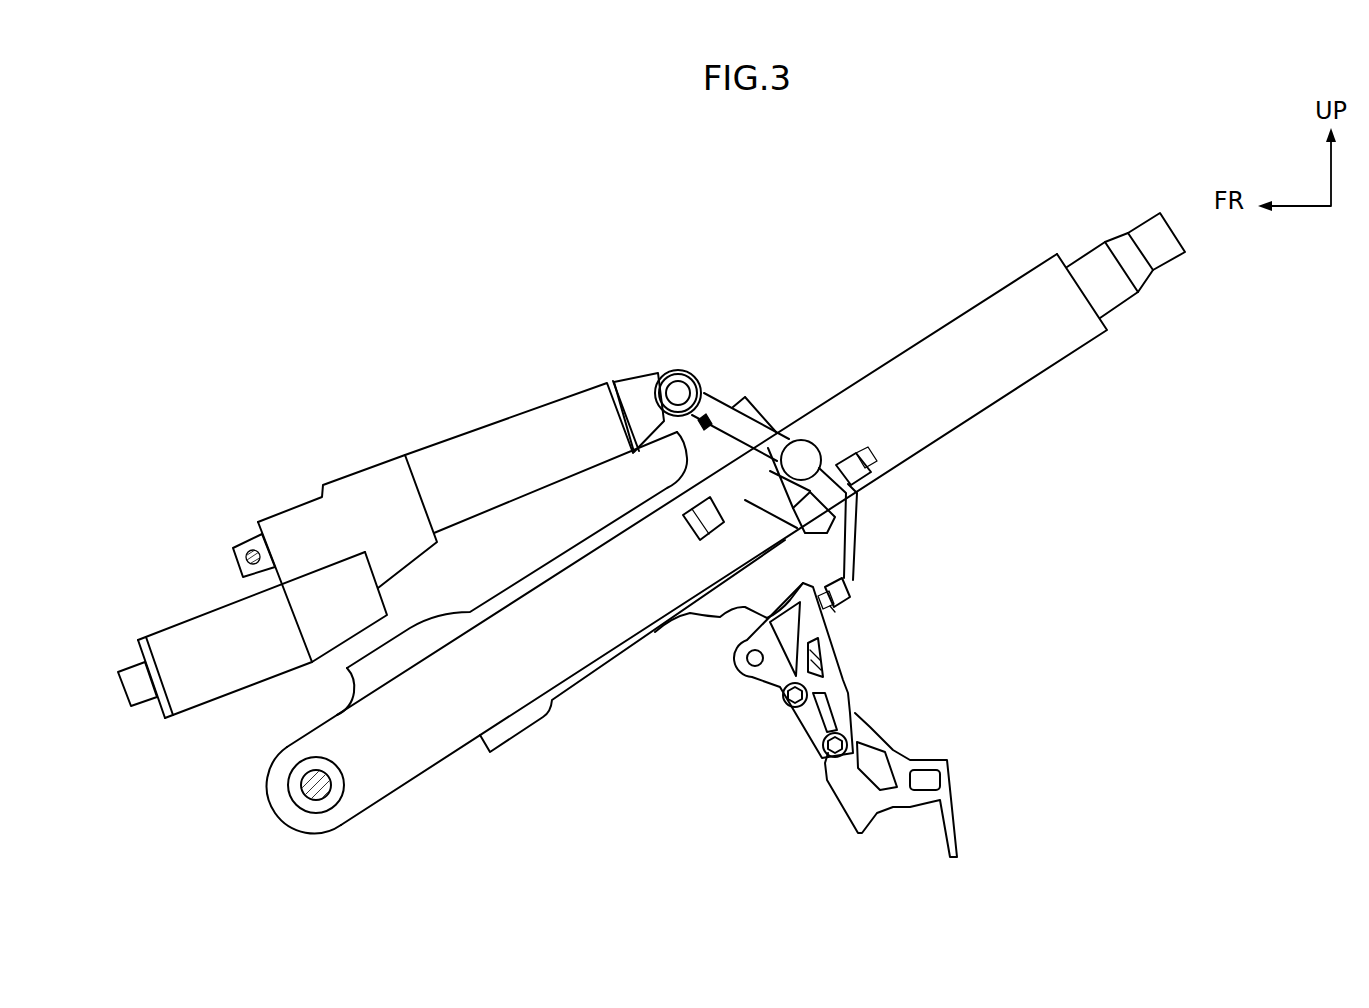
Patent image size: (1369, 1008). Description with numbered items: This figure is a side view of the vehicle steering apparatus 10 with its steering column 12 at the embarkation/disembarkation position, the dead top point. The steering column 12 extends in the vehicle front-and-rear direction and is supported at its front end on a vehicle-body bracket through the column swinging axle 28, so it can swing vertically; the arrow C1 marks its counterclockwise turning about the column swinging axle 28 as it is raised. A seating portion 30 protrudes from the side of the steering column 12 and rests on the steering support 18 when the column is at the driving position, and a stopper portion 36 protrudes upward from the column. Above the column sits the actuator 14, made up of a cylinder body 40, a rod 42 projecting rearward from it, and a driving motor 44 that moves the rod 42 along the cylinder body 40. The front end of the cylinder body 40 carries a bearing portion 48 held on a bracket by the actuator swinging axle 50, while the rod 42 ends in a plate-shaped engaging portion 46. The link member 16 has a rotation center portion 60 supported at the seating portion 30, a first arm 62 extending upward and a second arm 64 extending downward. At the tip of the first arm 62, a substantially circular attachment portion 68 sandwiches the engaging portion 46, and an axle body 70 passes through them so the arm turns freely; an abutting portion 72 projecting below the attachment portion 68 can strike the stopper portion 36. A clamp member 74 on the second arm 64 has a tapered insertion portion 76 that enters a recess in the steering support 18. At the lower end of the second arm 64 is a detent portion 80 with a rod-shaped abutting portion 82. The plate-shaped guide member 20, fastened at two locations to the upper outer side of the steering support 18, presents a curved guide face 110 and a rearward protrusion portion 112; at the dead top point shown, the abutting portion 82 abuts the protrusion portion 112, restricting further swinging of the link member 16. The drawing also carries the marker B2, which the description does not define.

The vehicle steering apparatus 10 is at (627, 212).
The steering column 12 is at (960, 310).
The actuator 14 is at (441, 404).
The link member 16 is at (792, 430).
The steering support 18 is at (958, 795).
The guide member 20 is at (776, 695).
The column swinging axle 28 is at (302, 786).
The seating portion 30 is at (690, 525).
The stopper portion 36 is at (705, 406).
The cylinder body 40 is at (490, 415).
The rod 42 is at (631, 378).
The driving motor 44 is at (164, 634).
The engaging portion 46 is at (652, 368).
The bearing portion 48 is at (248, 543).
The actuator swinging axle 50 is at (243, 562).
The rotation center portion 60 is at (817, 441).
The first arm 62 is at (748, 404).
The second arm 64 is at (858, 508).
The attachment portion 68 is at (677, 372).
The axle body 70 is at (694, 373).
The abutting portion 72 is at (708, 430).
The clamp member 74 is at (875, 460).
The insertion portion 76 is at (796, 530).
The detent portion 80 is at (852, 590).
The abutting portion 82 is at (835, 612).
The guide face 110 is at (847, 655).
The protrusion portion 112 is at (842, 575).
The bracket B2 is at (303, 512).
The arrow C1 is at (360, 730).